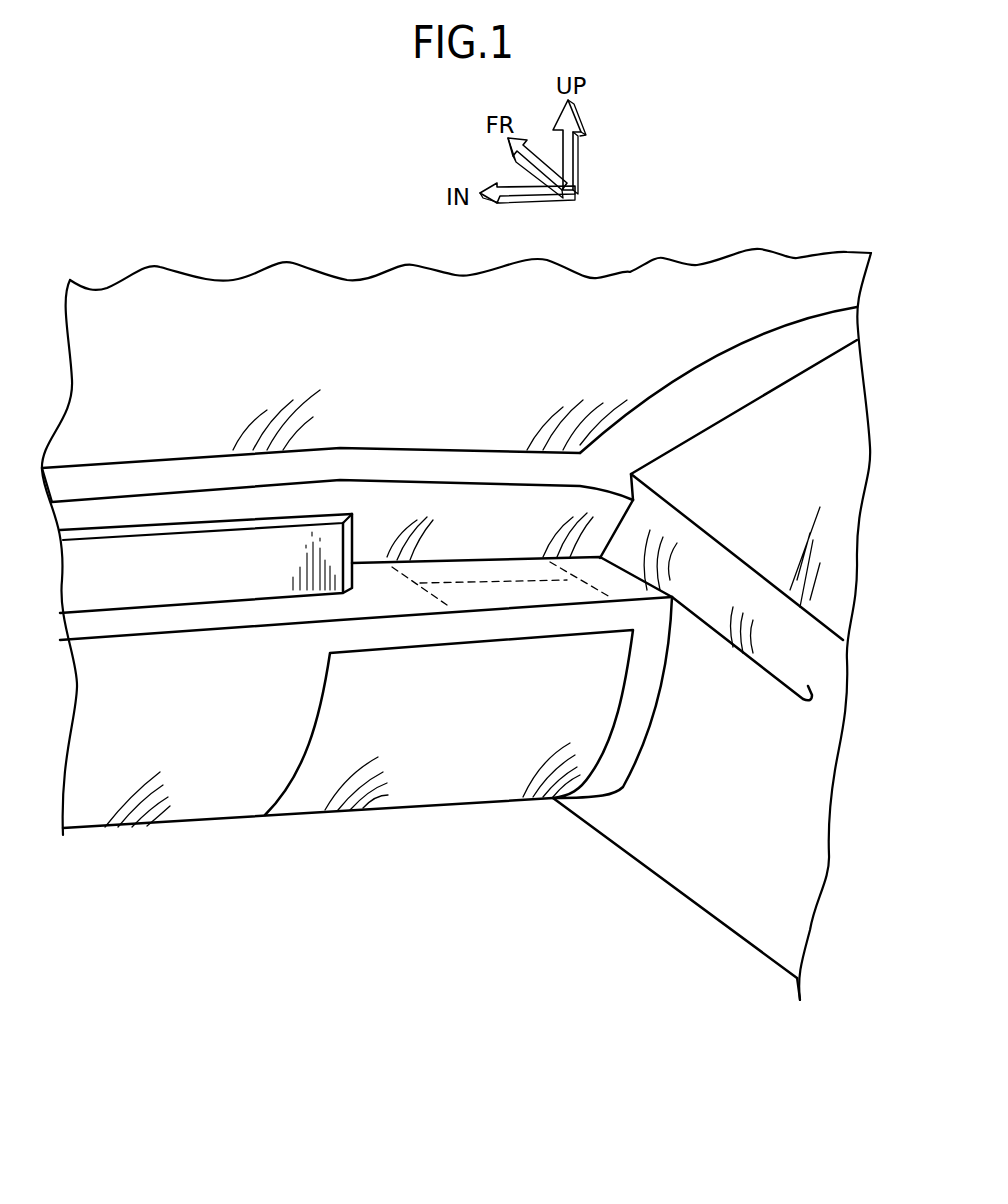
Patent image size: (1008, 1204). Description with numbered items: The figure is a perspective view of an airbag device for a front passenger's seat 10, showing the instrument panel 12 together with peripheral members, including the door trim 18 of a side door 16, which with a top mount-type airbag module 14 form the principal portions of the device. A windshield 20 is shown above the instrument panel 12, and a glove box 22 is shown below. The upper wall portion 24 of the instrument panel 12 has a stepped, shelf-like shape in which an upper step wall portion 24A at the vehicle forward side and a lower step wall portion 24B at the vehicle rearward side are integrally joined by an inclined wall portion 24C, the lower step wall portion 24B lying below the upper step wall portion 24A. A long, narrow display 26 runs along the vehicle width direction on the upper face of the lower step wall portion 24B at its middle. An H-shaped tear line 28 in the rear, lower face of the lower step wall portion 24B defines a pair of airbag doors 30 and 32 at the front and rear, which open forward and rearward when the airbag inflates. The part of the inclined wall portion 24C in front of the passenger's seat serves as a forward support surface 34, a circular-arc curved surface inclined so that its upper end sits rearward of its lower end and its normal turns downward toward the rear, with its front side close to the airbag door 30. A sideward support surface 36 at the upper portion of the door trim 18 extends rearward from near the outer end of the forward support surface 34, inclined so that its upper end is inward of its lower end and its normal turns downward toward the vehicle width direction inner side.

The airbag device for a front passenger's seat 10 is at (508, 944).
The instrument panel 12 is at (235, 792).
The top mount-type airbag module 14 is at (567, 622).
The side door 16 is at (742, 902).
The door trim 18 is at (683, 840).
The windshield 20 is at (225, 317).
The glove box 22 is at (453, 775).
The upper wall portion 24 is at (163, 473).
The upper step wall portion 24A is at (370, 467).
The lower step wall portion 24B is at (253, 613).
The inclined wall portion 24C is at (210, 503).
The display 26 is at (110, 530).
The tear line 28 is at (422, 583).
The airbag door 30 is at (457, 572).
The airbag door 32 is at (507, 593).
The forward support surface 34 is at (487, 510).
The sideward support surface 36 is at (703, 595).